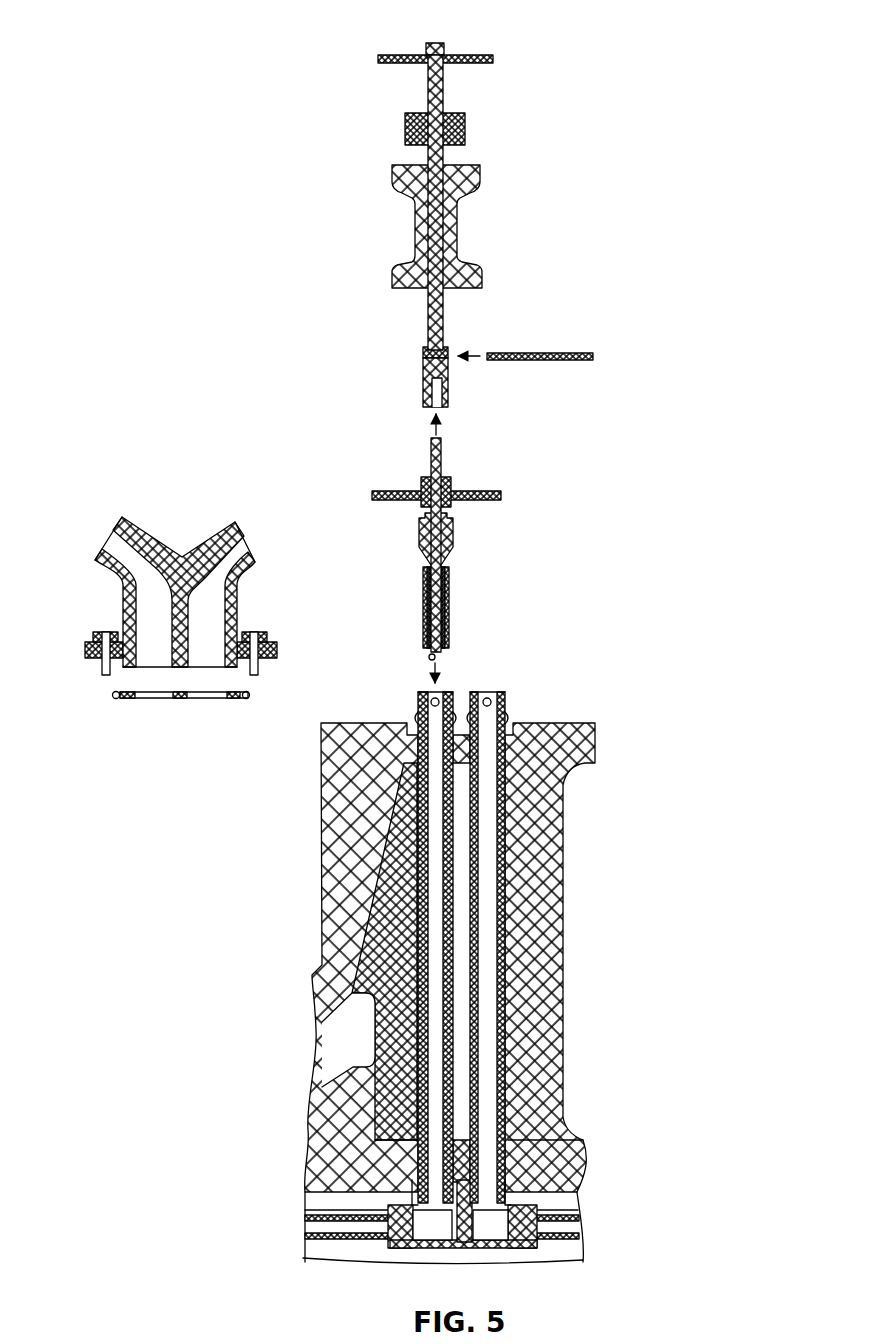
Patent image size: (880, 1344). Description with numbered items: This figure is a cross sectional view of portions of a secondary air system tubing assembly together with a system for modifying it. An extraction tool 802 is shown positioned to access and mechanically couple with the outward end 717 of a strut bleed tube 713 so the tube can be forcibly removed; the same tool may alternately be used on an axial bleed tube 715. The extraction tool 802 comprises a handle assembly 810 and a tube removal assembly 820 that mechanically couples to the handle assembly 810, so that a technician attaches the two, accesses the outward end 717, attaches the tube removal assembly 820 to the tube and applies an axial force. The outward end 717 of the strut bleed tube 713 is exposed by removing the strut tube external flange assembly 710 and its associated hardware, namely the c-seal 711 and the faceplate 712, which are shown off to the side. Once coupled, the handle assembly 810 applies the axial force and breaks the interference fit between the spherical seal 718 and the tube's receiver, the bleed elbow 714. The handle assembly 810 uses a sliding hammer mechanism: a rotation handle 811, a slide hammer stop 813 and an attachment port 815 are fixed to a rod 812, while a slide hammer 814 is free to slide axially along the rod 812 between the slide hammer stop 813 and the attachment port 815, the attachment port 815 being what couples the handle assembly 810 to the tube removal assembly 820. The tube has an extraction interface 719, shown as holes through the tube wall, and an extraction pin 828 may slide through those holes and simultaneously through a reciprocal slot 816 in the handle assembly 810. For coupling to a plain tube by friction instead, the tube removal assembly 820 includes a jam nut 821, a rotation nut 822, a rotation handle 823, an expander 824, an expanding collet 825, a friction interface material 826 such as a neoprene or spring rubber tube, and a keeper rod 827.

The strut tube external flange assembly 710 is at (124, 494).
The c-seal 711 is at (116, 702).
The faceplate 712 is at (203, 700).
The strut bleed tube 713 is at (413, 945).
The bleed elbow 714 is at (462, 1243).
The axial bleed tube 715 is at (363, 1243).
The outward end 717 is at (451, 677).
The spherical seal 718 is at (414, 722).
The extraction interface 719 is at (430, 698).
The extraction tool 802 is at (481, 36).
The handle assembly 810 is at (358, 45).
The rotation handle 811 is at (494, 58).
The rod 812 is at (445, 78).
The slide hammer stop 813 is at (466, 130).
The slide hammer 814 is at (482, 172).
The attachment port 815 is at (450, 378).
The reciprocal slot 816 is at (440, 355).
The tube removal assembly 820 is at (358, 440).
The jam nut 821 is at (442, 472).
The rotation nut 822 is at (452, 500).
The rotation handle 823 is at (502, 495).
The expander 824 is at (454, 537).
The expanding collet 825 is at (450, 590).
The friction interface material 826 is at (446, 620).
The keeper rod 827 is at (428, 655).
The extraction pin 828 is at (594, 357).